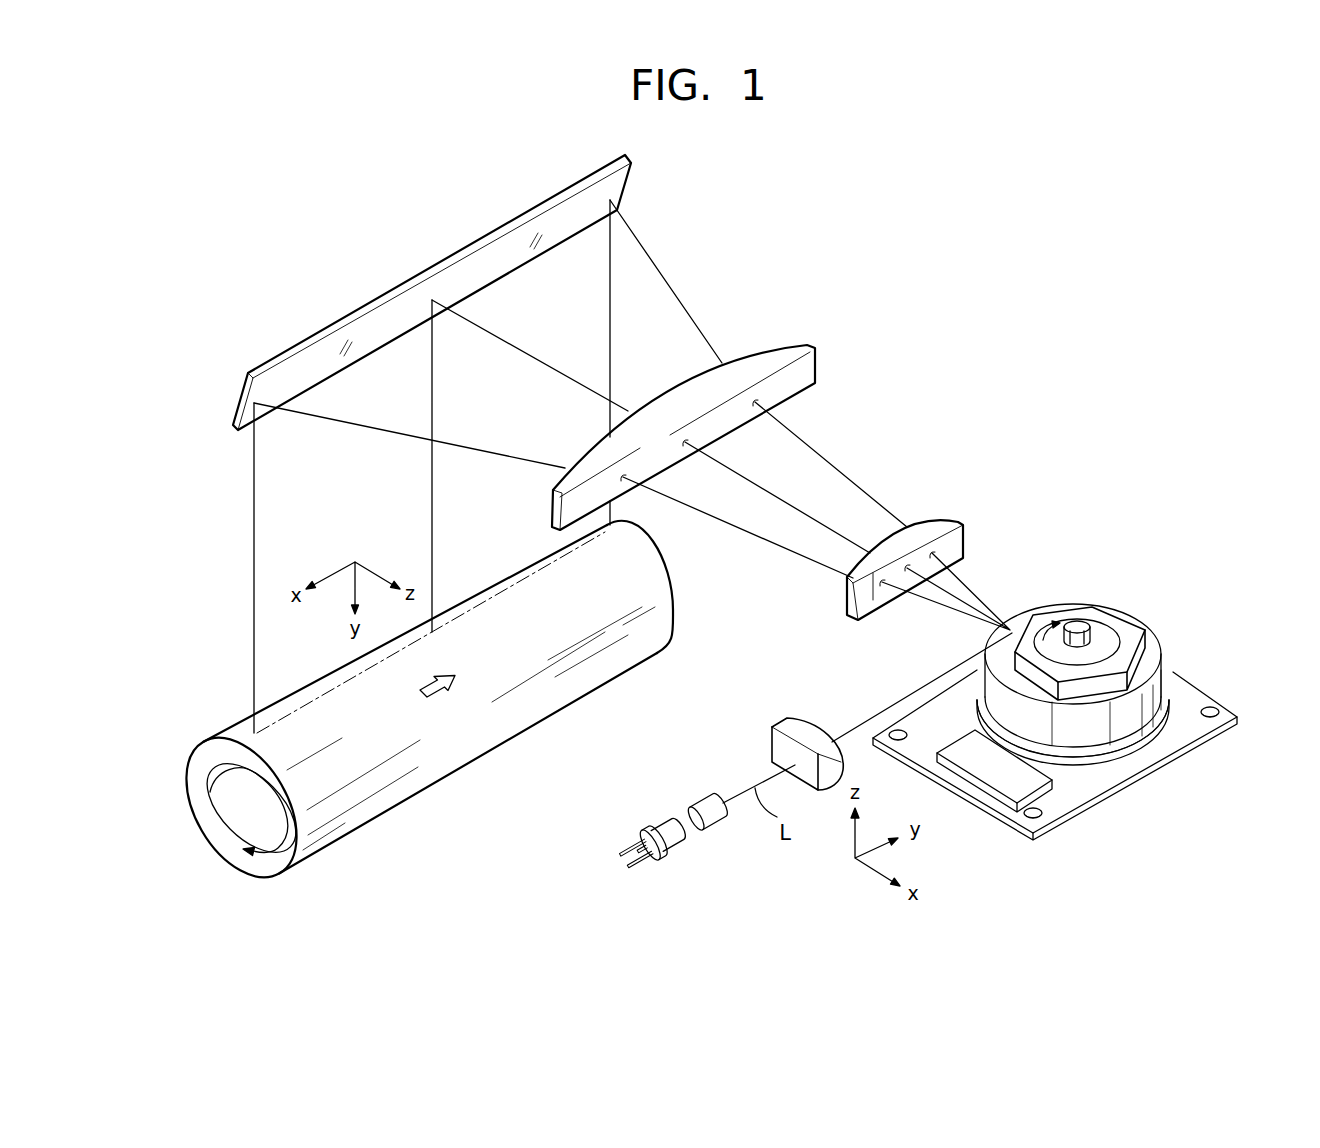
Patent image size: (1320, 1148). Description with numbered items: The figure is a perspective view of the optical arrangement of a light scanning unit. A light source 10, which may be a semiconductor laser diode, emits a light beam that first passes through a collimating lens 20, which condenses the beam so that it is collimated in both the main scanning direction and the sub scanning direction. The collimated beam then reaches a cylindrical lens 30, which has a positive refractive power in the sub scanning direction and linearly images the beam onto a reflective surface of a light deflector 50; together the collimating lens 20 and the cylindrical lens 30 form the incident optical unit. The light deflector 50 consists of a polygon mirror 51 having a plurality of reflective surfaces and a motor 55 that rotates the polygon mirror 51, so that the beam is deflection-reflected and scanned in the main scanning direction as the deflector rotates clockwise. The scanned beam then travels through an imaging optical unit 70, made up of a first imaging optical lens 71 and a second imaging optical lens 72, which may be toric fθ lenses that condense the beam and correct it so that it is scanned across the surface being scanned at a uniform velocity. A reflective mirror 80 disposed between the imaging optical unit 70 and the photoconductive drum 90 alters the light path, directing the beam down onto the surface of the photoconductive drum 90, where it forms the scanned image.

The light source 10 is at (668, 823).
The collimating lens 20 is at (705, 800).
The cylindrical lens 30 is at (782, 725).
The light deflector 50 is at (1055, 674).
The polygon mirror 51 is at (1125, 635).
The motor 55 is at (1155, 658).
The imaging optical unit 70 is at (863, 325).
The first imaging optical lens 71 is at (943, 523).
The second imaging optical lens 72 is at (810, 370).
The reflective mirror 80 is at (620, 187).
The photoconductive drum 90 is at (505, 572).